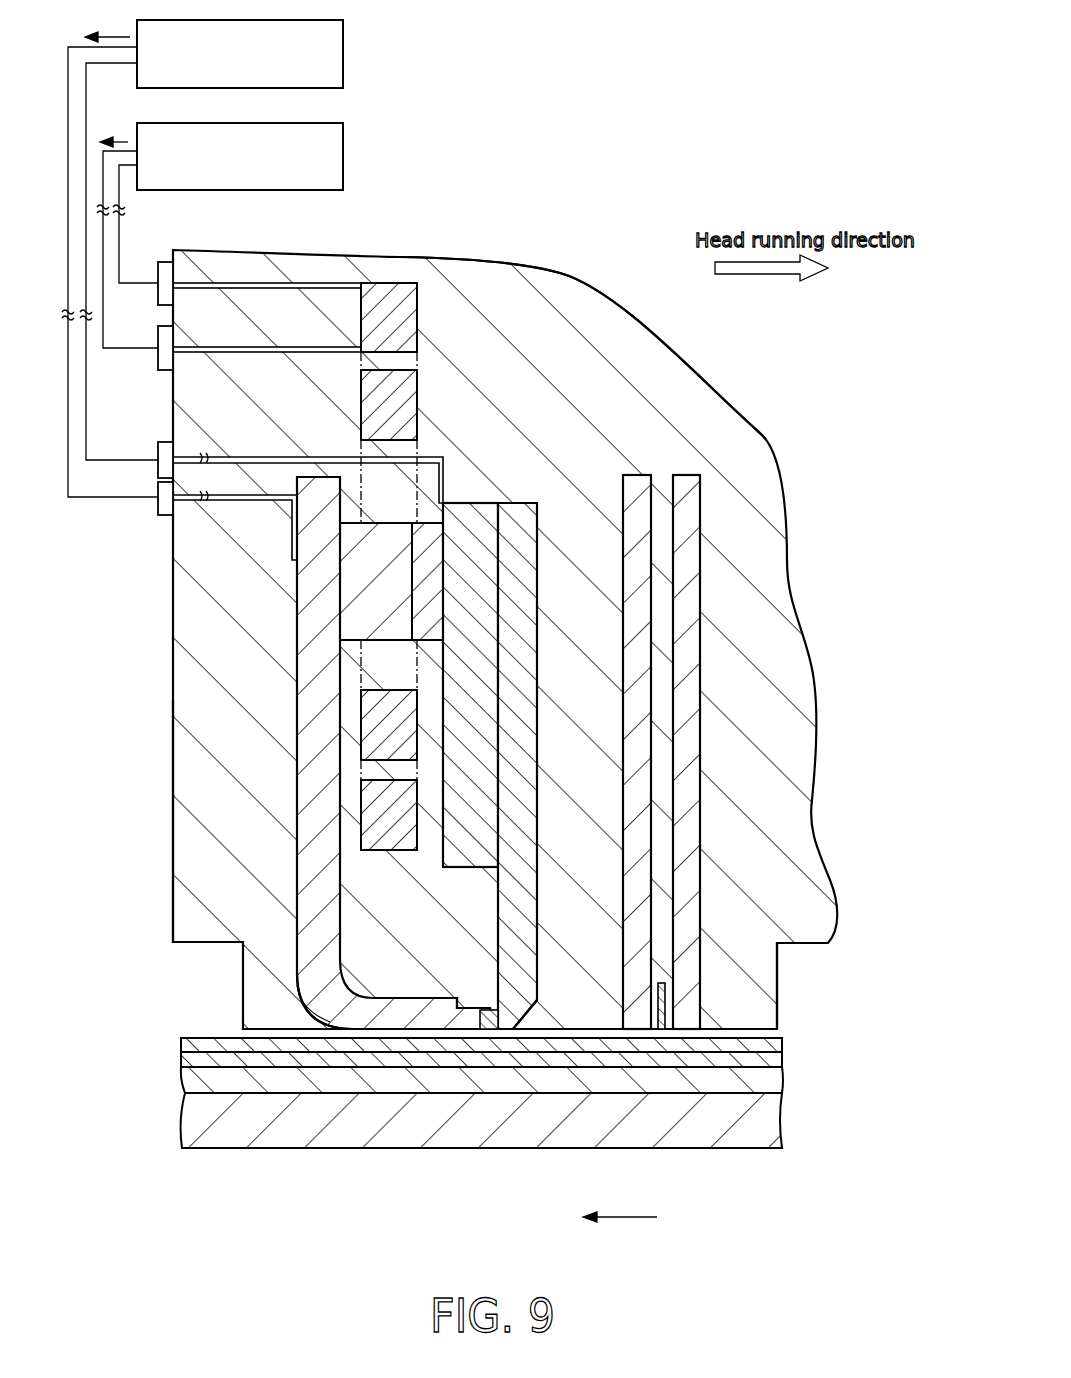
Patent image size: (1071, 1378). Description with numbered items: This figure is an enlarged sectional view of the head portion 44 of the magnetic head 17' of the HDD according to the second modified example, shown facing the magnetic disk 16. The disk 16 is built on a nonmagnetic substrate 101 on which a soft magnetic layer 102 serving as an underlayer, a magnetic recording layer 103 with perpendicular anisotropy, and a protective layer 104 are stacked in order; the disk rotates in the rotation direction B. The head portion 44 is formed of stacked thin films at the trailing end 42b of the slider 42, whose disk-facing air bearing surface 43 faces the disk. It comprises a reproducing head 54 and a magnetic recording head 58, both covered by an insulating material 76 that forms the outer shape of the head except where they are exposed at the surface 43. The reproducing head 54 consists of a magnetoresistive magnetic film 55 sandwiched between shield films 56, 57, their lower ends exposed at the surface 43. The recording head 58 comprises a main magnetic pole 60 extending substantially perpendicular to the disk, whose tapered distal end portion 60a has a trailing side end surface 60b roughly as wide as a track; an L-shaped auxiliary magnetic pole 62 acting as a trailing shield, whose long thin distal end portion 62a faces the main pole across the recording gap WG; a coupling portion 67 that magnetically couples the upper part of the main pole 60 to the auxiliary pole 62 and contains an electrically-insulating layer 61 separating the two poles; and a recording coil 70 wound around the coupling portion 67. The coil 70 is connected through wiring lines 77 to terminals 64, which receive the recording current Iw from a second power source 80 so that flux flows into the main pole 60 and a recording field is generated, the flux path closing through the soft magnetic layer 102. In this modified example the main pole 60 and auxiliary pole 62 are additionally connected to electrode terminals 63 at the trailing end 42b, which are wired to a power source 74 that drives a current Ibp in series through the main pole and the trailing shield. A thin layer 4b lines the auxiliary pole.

The magnetic head 17' is at (510, 596).
The head portion 44 is at (510, 638).
The slider 42 is at (750, 462).
The trailing end 42b is at (172, 855).
The air bearing surface 43 is at (807, 947).
The insulating material 76 is at (583, 306).
The magnetic recording head 58 is at (437, 517).
The recording coil 70 is at (471, 536).
The reproducing head 54 is at (740, 720).
The shield film 56 is at (690, 806).
The shield film 57 is at (640, 735).
The magnetic film 55 is at (668, 990).
The main magnetic pole 60 is at (679, 849).
The distal end portion 60a is at (513, 1000).
The trailing side end surface 60b is at (513, 1030).
The auxiliary magnetic pole 62 is at (304, 830).
The distal end portion 62a is at (383, 1020).
The electrically-insulating layer 61 is at (415, 615).
The coupling portion 67 is at (355, 572).
The insulating layer 4b is at (487, 1005).
The electrode terminals 63 is at (157, 448).
The terminals 64 is at (148, 262).
The wiring lines 77 is at (143, 284).
The power source 74 is at (343, 47).
The second power source 80 is at (343, 150).
The bias current Ibp is at (92, 36).
The recording current Iw is at (115, 137).
The recording gap WG is at (481, 1035).
The rotation direction B is at (620, 1231).
The magnetic disk 16 is at (512, 1121).
The substrate 101 is at (768, 1122).
The soft magnetic layer 102 is at (775, 1080).
The magnetic recording layer 103 is at (770, 1060).
The protective layer 104 is at (760, 1046).